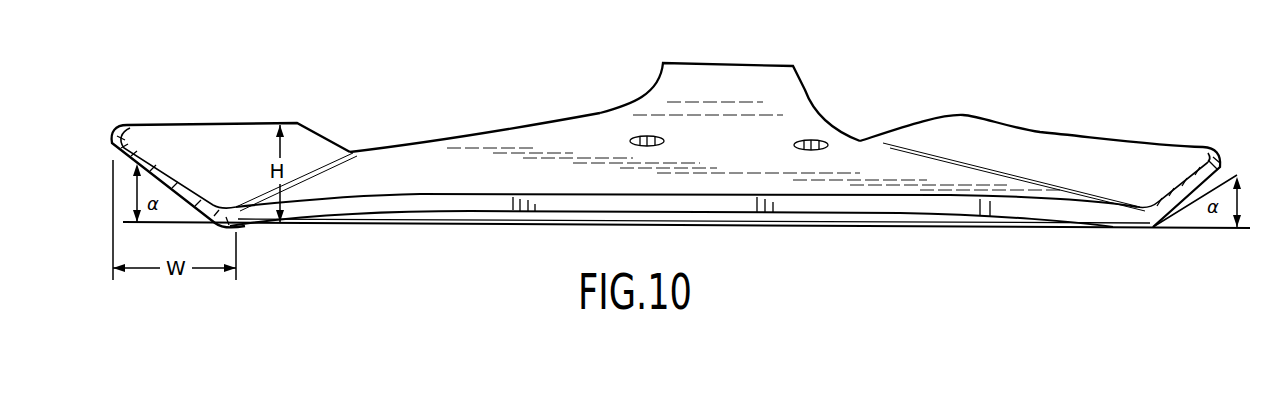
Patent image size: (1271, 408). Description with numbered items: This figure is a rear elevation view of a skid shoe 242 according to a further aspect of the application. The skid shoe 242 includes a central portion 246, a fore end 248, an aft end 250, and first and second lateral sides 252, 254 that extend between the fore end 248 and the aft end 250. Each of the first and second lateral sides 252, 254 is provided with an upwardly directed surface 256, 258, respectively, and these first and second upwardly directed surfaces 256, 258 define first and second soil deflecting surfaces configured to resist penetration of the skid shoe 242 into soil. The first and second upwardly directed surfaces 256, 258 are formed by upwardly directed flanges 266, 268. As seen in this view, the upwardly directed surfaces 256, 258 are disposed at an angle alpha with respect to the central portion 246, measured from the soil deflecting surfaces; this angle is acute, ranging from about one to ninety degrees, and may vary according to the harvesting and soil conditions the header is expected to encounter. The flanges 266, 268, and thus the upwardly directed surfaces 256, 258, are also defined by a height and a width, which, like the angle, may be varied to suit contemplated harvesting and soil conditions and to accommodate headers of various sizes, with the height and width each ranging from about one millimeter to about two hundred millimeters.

The skid shoe 242 is at (952, 275).
The central portion 246 is at (700, 147).
The fore end 248 is at (688, 82).
The aft end 250 is at (613, 183).
The first lateral side 252 is at (390, 170).
The second lateral side 254 is at (870, 153).
The first upwardly directed surface 256 is at (165, 178).
The second upwardly directed surface 258 is at (1183, 193).
The first upwardly directed flange 266 is at (232, 122).
The second upwardly directed flange 268 is at (1040, 132).